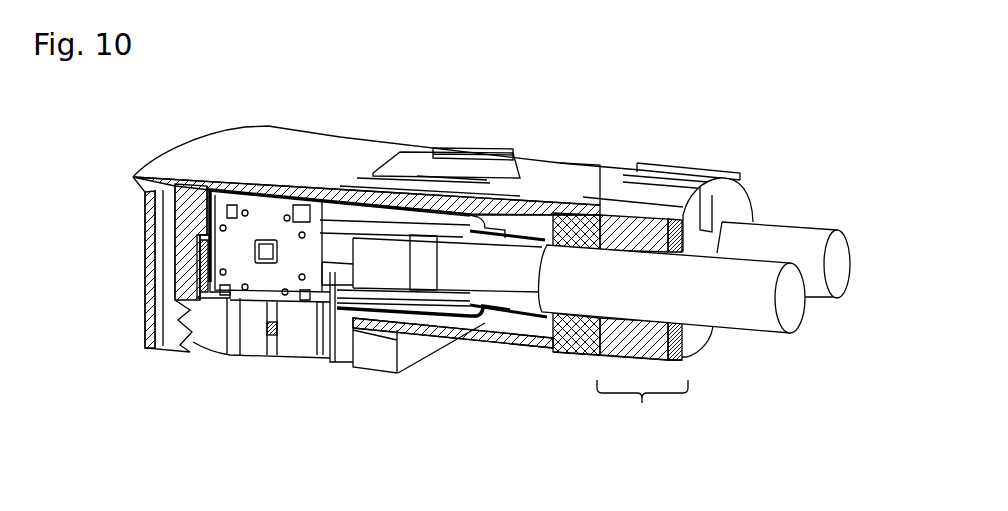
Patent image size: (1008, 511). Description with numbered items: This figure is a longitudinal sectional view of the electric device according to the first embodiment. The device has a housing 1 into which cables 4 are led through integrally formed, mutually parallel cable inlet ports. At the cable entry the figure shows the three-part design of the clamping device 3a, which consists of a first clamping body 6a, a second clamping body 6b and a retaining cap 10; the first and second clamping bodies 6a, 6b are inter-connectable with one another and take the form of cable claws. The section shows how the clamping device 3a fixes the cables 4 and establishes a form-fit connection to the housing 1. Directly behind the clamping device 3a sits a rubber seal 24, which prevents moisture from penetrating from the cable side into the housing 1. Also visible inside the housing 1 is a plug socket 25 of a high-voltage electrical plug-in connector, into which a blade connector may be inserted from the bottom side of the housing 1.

The housing 1 is at (288, 173).
The plug socket 25 is at (295, 250).
The rubber seal 24 is at (573, 328).
The first clamping body 6a is at (640, 227).
The second clamping body 6b is at (612, 335).
The clamping device 3a is at (642, 417).
The retaining cap 10 is at (728, 203).
The cable 4 is at (713, 287).